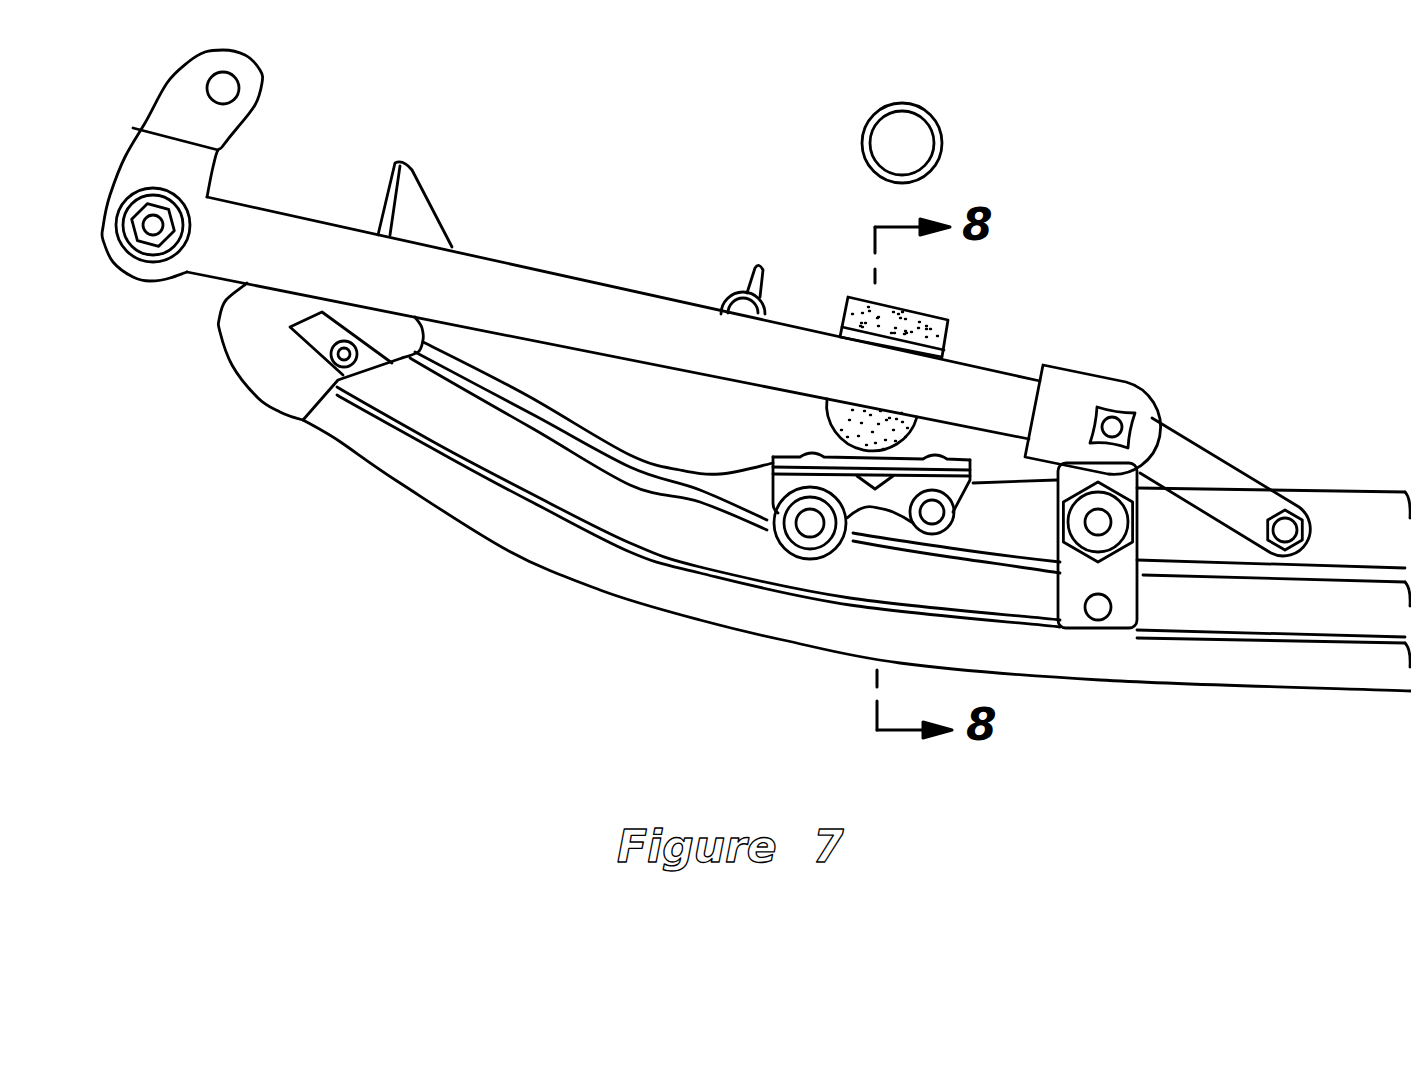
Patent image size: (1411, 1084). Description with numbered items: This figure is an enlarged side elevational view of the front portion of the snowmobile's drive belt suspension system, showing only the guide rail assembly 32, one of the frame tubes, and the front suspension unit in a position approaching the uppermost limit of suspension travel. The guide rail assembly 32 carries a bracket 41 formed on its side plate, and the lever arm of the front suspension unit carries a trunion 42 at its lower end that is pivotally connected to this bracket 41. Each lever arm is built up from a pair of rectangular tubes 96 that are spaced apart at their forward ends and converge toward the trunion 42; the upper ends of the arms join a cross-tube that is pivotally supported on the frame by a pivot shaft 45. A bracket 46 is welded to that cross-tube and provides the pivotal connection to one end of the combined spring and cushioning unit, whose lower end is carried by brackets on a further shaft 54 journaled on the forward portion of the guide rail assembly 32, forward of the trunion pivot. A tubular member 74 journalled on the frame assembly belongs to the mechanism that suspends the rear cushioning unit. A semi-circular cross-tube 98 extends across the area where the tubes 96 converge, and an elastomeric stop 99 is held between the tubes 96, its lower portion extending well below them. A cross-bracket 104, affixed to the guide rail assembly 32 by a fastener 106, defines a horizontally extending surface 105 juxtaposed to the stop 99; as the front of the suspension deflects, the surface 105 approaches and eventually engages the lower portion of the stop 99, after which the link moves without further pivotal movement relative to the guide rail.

The guide rail assembly 32 is at (593, 573).
The bracket 41 is at (1248, 467).
The trunion 42 is at (1065, 388).
The pivot shaft 45 is at (153, 227).
The bracket 46 is at (228, 122).
The shaft 54 is at (1118, 417).
The tubular member 74 is at (942, 150).
The rectangular tube 96 is at (597, 343).
The cross-tube 98 is at (733, 300).
The elastomeric stop 99 is at (947, 318).
The cross-bracket 104 is at (790, 455).
The horizontally extending surface 105 is at (927, 427).
The fastener 106 is at (780, 548).